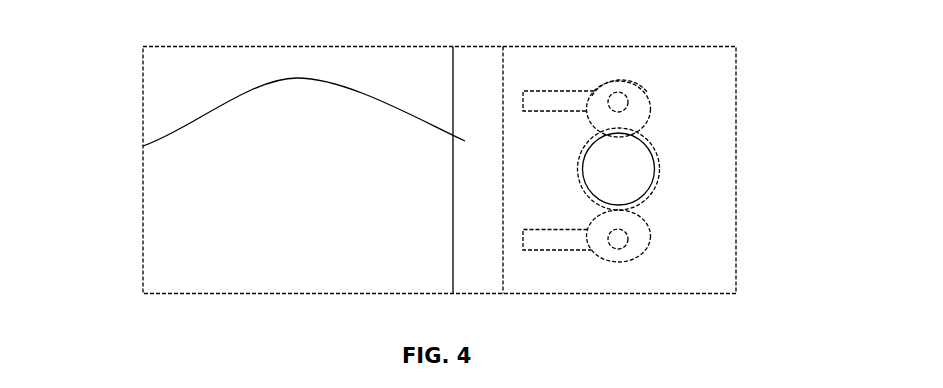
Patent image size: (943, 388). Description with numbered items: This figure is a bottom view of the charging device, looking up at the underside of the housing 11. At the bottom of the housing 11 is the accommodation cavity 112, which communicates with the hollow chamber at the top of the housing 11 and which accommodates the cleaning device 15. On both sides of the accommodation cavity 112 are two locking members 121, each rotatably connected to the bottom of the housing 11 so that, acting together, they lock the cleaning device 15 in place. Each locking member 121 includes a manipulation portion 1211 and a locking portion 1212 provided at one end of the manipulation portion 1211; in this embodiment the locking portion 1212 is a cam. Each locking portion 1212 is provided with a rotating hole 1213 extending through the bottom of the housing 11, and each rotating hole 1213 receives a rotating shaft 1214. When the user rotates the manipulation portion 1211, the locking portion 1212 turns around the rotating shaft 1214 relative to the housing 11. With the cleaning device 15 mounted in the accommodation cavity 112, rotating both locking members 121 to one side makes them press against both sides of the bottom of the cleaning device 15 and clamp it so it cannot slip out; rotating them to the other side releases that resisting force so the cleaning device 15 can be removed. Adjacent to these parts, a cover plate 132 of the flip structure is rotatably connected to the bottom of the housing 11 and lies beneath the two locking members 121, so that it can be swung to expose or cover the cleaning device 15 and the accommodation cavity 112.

The housing 11 is at (143, 230).
The cover plate 132 is at (143, 146).
The locking member 121 is at (664, 270).
The manipulation portion 1211 is at (537, 97).
The locking portion 1212 is at (637, 122).
The rotating hole 1213 is at (622, 81).
The rotating shaft 1214 is at (618, 102).
The accommodation cavity 112 is at (657, 163).
The cleaning device 15 is at (640, 185).